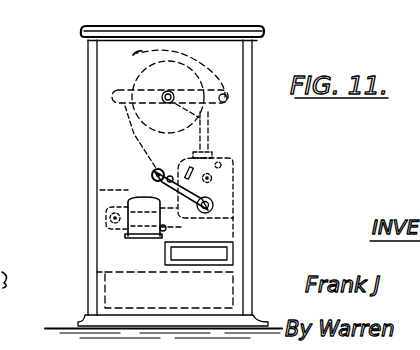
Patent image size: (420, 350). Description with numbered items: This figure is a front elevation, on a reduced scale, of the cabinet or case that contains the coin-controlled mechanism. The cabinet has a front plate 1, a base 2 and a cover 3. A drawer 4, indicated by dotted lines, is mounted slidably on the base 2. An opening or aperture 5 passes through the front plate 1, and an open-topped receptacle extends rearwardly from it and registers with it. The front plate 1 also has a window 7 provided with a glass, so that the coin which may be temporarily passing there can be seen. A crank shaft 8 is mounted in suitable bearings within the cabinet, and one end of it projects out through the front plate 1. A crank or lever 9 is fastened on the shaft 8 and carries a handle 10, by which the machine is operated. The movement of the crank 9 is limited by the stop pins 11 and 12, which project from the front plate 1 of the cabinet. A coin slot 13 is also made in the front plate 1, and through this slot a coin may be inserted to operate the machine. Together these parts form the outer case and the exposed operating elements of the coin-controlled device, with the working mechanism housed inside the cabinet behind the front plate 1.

The front plate 1 is at (230, 139).
The base 2 is at (80, 326).
The cover 3 is at (260, 27).
The drawer 4 is at (222, 297).
The opening or aperture 5 is at (113, 204).
The window 7 is at (222, 255).
The crank shaft 8 is at (209, 205).
The crank or lever 9 is at (155, 186).
The handle 10 is at (152, 176).
The stop pin 11 is at (157, 170).
The stop pin 12 is at (164, 231).
The coin slot 13 is at (135, 138).